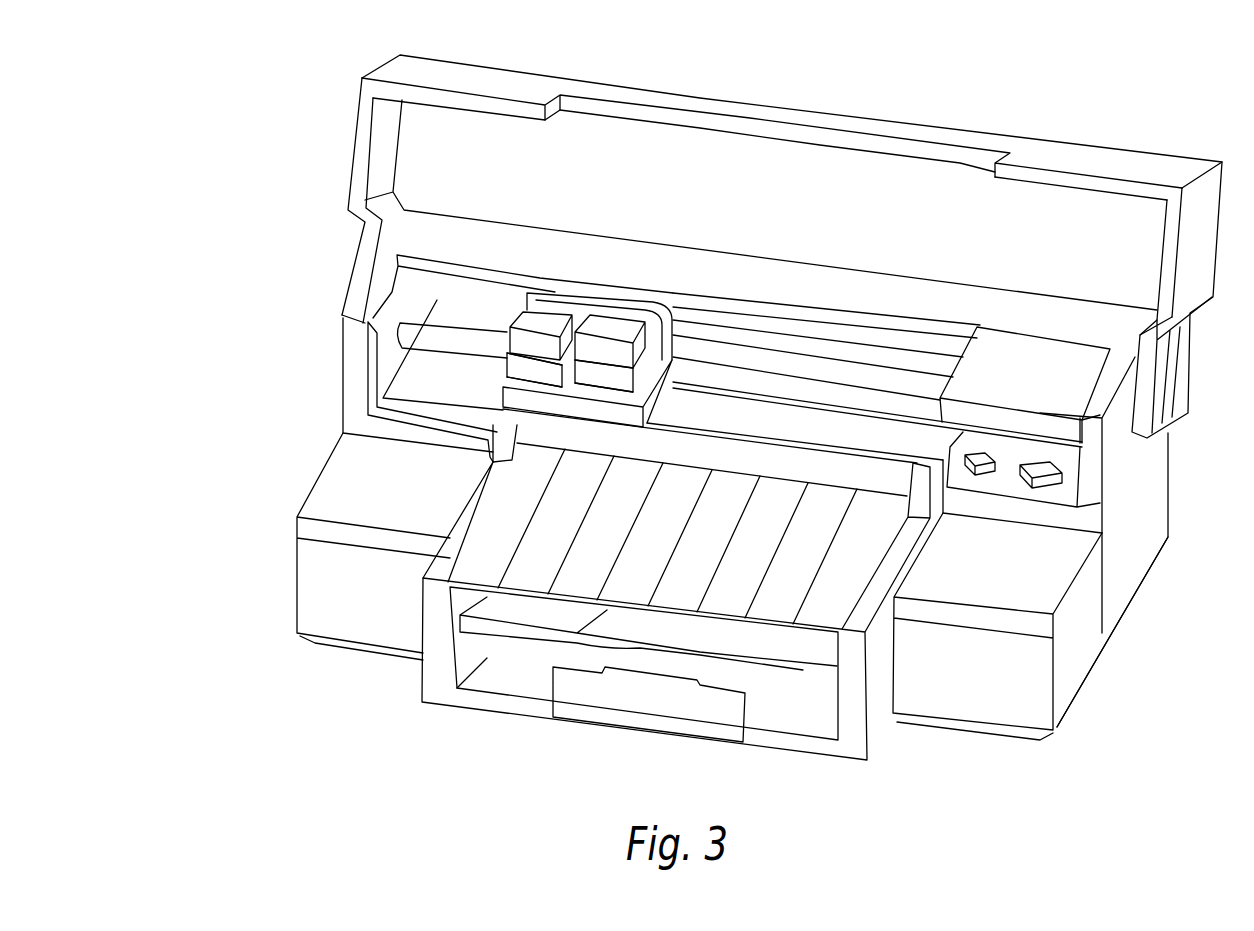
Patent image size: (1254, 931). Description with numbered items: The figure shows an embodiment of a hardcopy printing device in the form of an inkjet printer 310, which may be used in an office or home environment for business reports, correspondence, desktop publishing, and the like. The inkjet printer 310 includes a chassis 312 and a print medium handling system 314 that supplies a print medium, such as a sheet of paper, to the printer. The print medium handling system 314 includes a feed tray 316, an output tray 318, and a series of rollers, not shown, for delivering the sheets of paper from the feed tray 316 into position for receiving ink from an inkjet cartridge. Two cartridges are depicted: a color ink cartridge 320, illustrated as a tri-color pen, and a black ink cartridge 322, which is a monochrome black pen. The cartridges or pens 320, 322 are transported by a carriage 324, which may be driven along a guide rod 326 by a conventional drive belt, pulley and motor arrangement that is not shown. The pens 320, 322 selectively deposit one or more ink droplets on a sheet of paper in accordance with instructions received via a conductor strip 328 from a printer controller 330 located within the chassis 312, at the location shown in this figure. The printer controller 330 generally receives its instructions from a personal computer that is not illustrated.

The inkjet printer 310 is at (252, 67).
The chassis 312 is at (1077, 688).
The print medium handling system 314 is at (428, 728).
The feed tray 316 is at (523, 677).
The output tray 318 is at (710, 640).
The color ink cartridge 320 is at (612, 327).
The black ink cartridge 322 is at (535, 312).
The carriage 324 is at (597, 283).
The guide rod 326 is at (705, 372).
The conductor strip 328 is at (863, 357).
The printer controller 330 is at (1132, 575).